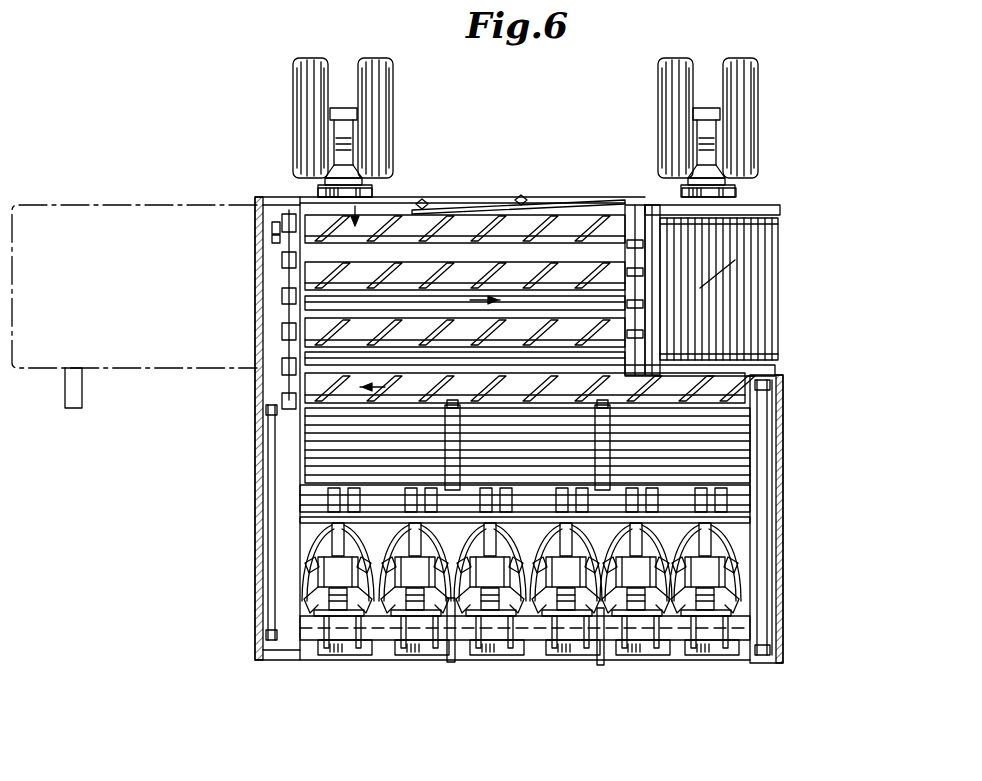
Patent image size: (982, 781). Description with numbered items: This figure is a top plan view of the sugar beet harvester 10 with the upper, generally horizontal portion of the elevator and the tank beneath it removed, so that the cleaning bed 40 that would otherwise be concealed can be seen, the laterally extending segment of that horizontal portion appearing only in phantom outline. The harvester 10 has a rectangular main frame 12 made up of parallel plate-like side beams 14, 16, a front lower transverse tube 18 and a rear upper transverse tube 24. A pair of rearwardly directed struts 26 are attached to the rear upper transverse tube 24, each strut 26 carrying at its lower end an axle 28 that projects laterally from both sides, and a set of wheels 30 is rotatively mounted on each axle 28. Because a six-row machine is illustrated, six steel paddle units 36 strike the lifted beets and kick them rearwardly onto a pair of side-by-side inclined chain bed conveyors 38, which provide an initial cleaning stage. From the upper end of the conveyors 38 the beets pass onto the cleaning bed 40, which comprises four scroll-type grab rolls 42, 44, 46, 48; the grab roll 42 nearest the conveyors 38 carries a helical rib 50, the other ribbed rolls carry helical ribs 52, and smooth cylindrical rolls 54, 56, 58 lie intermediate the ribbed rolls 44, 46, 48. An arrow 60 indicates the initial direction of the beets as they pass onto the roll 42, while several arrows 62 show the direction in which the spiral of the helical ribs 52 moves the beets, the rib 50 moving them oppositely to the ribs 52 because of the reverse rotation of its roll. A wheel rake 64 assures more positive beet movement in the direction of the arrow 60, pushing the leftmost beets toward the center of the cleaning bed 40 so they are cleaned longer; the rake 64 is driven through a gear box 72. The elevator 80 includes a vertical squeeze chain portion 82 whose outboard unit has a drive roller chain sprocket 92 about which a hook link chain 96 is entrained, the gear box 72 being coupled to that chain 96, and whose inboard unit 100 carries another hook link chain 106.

The sugar beet harvester 10 is at (190, 540).
The main frame 12 is at (257, 604).
The side beam 14 is at (783, 535).
The side beam 16 is at (300, 520).
The front lower transverse tube 18 is at (428, 650).
The rear upper transverse tube 24 is at (580, 210).
The strut 26 is at (345, 108).
The axle 28 is at (330, 122).
The wheels 30 is at (293, 85).
The steel paddle unit 36 is at (320, 500).
The inclined chain bed conveyor 38 is at (320, 486).
The cleaning bed 40 is at (445, 220).
The grab roll 42 is at (300, 378).
The grab roll 44 is at (290, 325).
The grab roll 46 is at (275, 282).
The grab roll 48 is at (530, 213).
The helical rib 50 is at (740, 430).
The helical ribs 52 is at (395, 230).
The smooth cylindrical roll 54 is at (320, 356).
The smooth cylindrical roll 56 is at (320, 304).
The smooth cylindrical roll 58 is at (305, 200).
The arrow 60 is at (330, 440).
The arrows 62 is at (468, 296).
The wheel rake 64 is at (654, 210).
The gear box 72 is at (735, 410).
The elevator 80 is at (780, 228).
The vertical squeeze chain portion 82 is at (780, 281).
The drive roller chain sprocket 92 is at (762, 362).
The hook link chain 96 is at (760, 300).
The inboard unit 100 is at (712, 273).
The hook link chain 106 is at (740, 262).